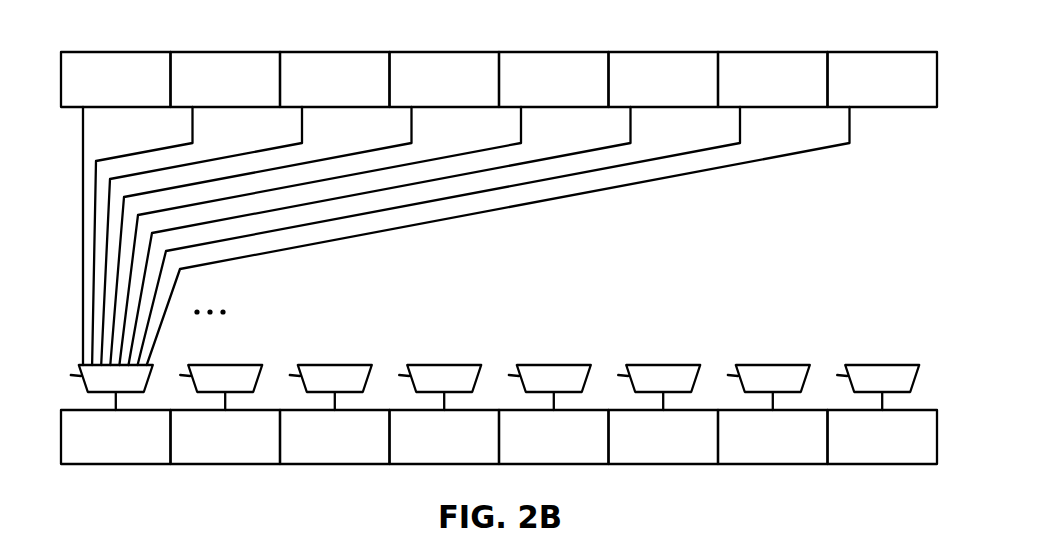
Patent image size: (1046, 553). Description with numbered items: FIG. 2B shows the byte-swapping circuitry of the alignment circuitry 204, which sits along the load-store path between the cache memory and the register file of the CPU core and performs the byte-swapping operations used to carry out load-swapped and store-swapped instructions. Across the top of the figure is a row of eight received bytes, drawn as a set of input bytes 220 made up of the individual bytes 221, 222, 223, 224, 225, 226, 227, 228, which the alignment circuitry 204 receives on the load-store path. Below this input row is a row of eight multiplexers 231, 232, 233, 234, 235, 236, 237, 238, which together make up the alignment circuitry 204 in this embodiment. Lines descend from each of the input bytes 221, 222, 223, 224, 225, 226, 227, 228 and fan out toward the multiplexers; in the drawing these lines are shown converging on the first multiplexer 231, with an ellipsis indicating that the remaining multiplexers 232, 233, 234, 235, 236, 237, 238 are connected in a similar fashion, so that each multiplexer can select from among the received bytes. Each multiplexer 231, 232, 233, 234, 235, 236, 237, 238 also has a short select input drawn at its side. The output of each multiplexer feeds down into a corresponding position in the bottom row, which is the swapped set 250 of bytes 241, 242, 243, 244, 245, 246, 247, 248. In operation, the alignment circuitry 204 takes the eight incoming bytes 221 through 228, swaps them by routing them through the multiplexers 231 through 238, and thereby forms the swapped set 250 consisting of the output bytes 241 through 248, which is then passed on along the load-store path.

The alignment circuitry 204 is at (821, 277).
The set of input bytes 220 is at (61, 50).
The byte 221 is at (116, 79).
The byte 222 is at (226, 79).
The byte 223 is at (335, 79).
The byte 224 is at (445, 79).
The byte 225 is at (554, 79).
The byte 226 is at (664, 79).
The byte 227 is at (773, 79).
The byte 228 is at (883, 79).
The multiplexer 231 is at (112, 387).
The multiplexer 232 is at (221, 387).
The multiplexer 233 is at (331, 387).
The multiplexer 234 is at (440, 387).
The multiplexer 235 is at (550, 387).
The multiplexer 236 is at (659, 387).
The multiplexer 237 is at (769, 387).
The multiplexer 238 is at (878, 387).
The swapped byte 241 is at (116, 437).
The swapped byte 242 is at (226, 437).
The swapped byte 243 is at (335, 437).
The swapped byte 244 is at (445, 437).
The swapped byte 245 is at (554, 437).
The swapped byte 246 is at (664, 437).
The swapped byte 247 is at (773, 437).
The swapped byte 248 is at (883, 437).
The swapped set of bytes 250 is at (61, 466).